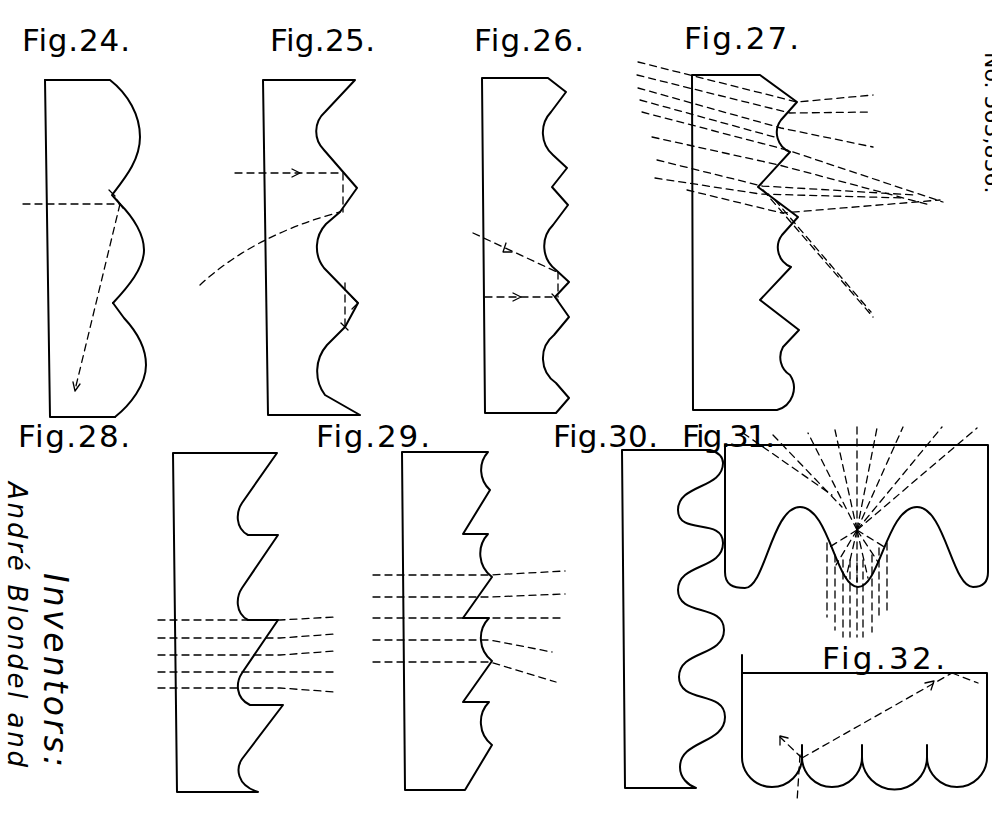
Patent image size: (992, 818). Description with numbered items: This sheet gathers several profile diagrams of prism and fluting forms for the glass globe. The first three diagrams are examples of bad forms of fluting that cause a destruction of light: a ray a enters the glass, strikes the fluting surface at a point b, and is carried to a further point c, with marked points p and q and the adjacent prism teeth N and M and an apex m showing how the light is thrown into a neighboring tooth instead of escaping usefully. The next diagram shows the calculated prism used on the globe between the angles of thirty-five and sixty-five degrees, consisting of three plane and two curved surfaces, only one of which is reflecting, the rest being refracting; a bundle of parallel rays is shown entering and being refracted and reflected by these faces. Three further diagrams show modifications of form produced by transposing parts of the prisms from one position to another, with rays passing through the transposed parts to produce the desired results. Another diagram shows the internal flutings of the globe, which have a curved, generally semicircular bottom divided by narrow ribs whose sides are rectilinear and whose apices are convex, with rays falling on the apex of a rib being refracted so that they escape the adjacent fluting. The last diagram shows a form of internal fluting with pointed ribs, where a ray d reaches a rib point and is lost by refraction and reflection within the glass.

In FIG. 24, the incident ray a is at (71, 214).
In FIG. 25, the incident ray a is at (287, 178).
In FIG. 26, the incident ray a is at (520, 290).
In FIG. 24, the point of incidence b is at (126, 201).
In FIG. 25, the point of incidence b is at (352, 187).
In FIG. 26, the point of incidence b is at (564, 305).
In FIG. 32, the point of incidence b is at (797, 769).
In FIG. 24, the refracted ray / exit point c is at (96, 305).
In FIG. 25, the refracted ray / exit point c is at (277, 244).
In FIG. 26, the refracted ray / exit point c is at (569, 278).
In FIG. 32, the refracted ray / exit point c is at (883, 705).
In FIG. 24, the reference point on prism face p is at (103, 186).
In FIG. 25, the reference point on prism face p is at (351, 297).
In FIG. 25, the reference point on prism face q is at (347, 333).
In FIG. 24, the prism tooth N is at (136, 253).
In FIG. 24, the prism tooth M is at (123, 360).
In FIG. 25, the apex of prism tooth m is at (367, 304).
In FIG. 26, the reflected ray d is at (515, 251).
In FIG. 32, the reflected ray d is at (965, 688).